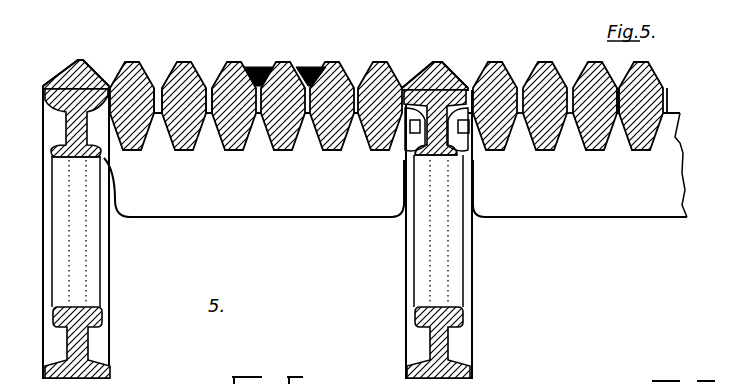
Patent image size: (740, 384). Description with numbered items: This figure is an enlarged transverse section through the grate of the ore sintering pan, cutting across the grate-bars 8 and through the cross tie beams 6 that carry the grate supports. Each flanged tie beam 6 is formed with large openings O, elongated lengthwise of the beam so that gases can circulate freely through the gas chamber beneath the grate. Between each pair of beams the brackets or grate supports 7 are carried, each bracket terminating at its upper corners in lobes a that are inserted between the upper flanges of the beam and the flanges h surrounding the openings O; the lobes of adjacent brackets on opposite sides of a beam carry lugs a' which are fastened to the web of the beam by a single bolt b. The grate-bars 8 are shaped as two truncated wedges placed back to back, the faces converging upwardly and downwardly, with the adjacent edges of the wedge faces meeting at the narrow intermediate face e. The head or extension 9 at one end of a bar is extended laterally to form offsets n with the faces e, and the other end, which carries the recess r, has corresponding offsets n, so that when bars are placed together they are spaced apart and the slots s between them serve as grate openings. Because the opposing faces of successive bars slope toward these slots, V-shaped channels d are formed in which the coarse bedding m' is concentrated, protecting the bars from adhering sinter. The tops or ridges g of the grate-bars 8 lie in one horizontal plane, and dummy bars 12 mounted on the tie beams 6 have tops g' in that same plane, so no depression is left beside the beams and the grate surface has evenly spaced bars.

The tops of the dummy bars g' is at (246, 61).
The dummy bars 12 is at (77, 72).
The tops or ridges of the grate-bars g is at (207, 90).
The slots between the bars s is at (158, 88).
The grate-bars 8 is at (180, 62).
The coarse bedding m' is at (283, 60).
The V-shaped grooves or channels d is at (357, 75).
The lobes a is at (251, 100).
The lugs a' is at (445, 151).
The bolt b is at (466, 136).
The recess r is at (518, 86).
The offsets n is at (666, 87).
The narrow intermediate face e is at (680, 138).
The head or extension 9 is at (663, 103).
The brackets or grate supports 7 is at (287, 207).
The openings O is at (452, 248).
The tie beams 6 is at (98, 325).
The flanges surrounding the openings h is at (104, 157).